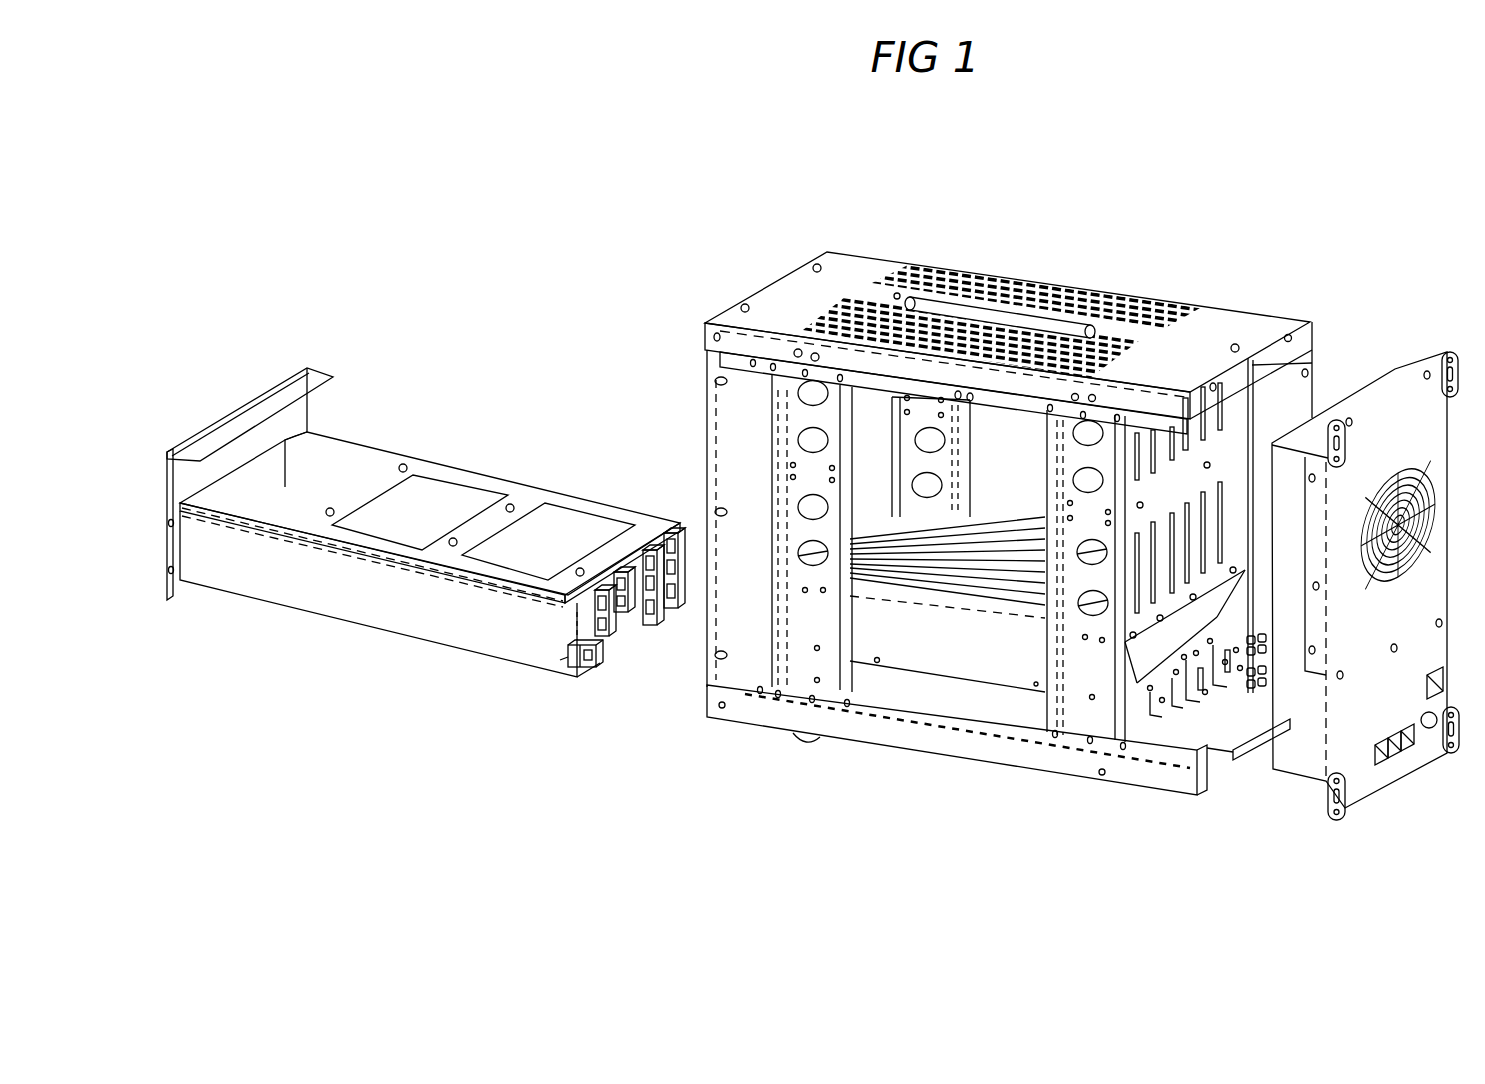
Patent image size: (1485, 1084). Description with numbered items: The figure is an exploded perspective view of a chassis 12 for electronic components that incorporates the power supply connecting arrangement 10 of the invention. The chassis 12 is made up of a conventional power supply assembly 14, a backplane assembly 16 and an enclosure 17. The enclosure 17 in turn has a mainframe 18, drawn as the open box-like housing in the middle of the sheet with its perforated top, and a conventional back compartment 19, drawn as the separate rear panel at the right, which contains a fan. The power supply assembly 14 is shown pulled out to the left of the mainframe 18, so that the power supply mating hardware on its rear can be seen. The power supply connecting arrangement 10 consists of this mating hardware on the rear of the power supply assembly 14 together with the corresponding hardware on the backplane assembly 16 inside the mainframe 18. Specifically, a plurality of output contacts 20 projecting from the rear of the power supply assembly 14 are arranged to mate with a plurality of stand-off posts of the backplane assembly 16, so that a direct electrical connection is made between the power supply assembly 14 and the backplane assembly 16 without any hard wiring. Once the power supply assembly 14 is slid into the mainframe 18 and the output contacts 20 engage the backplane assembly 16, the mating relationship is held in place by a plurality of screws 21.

The power supply connecting arrangement 10 is at (734, 587).
The chassis 12 is at (1027, 522).
The power supply assembly 14 is at (424, 500).
The backplane assembly 16 is at (1167, 493).
The enclosure 17 is at (1306, 303).
The mainframe 18 is at (1008, 276).
The back compartment 19 is at (1415, 365).
The output contacts 20 is at (665, 582).
The screws 21 is at (1216, 712).